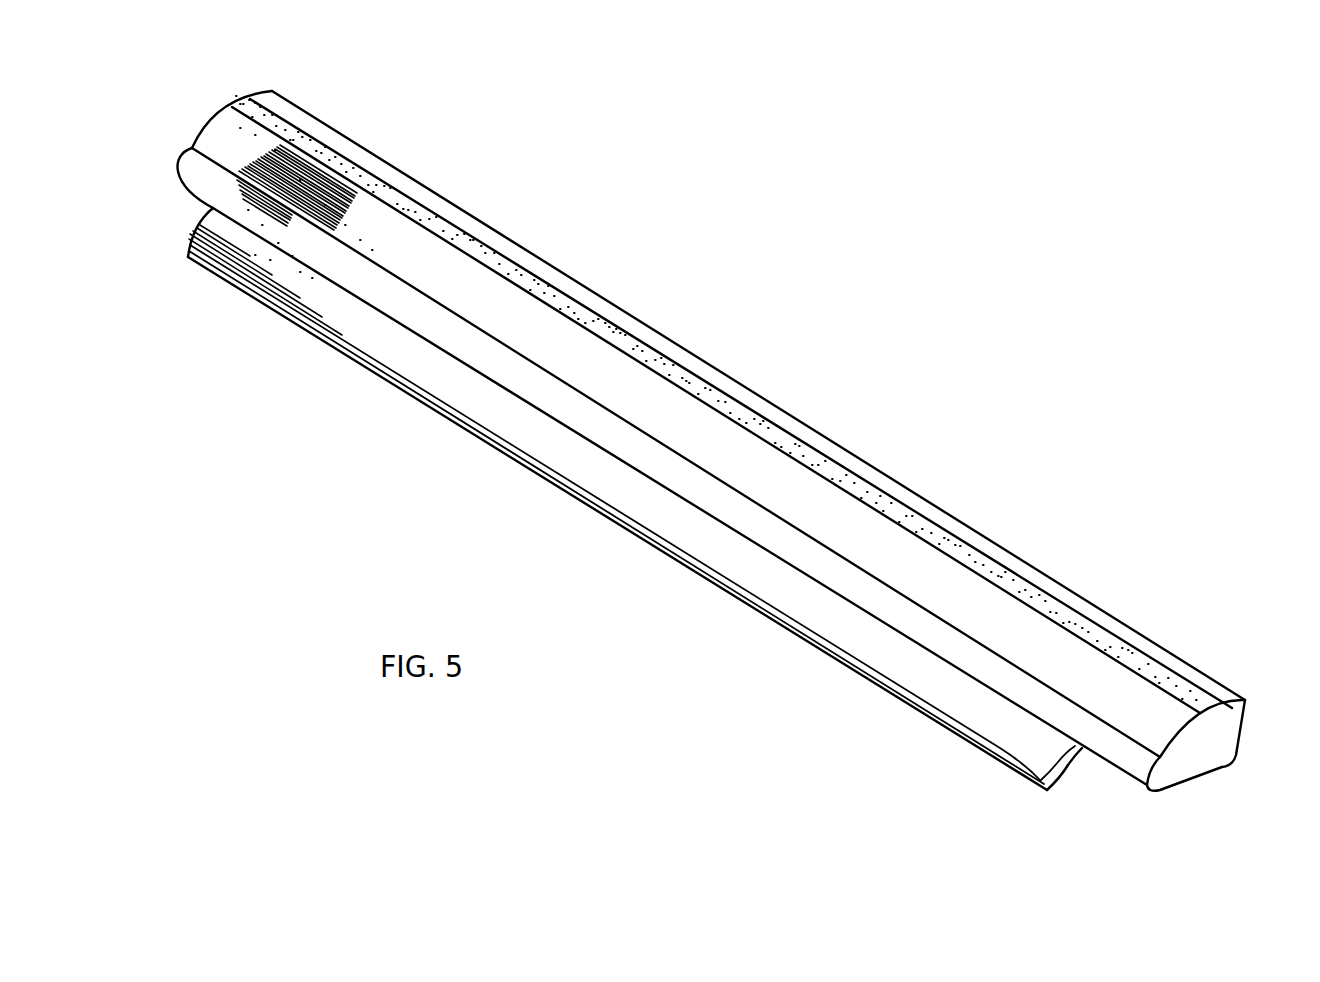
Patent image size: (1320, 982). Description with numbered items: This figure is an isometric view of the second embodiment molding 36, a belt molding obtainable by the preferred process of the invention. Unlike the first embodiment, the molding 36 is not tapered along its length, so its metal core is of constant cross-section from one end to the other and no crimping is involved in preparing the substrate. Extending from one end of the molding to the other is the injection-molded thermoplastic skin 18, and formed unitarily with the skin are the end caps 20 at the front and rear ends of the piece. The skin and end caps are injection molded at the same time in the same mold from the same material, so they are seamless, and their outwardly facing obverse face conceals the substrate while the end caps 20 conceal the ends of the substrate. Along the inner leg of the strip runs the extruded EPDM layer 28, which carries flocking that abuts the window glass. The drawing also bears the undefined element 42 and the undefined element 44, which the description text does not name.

The top surface of weatherstrip 18 is at (1108, 638).
The end portion of weatherstrip 20 is at (203, 132).
The sealing fin 28 is at (973, 708).
The weatherstrip 36 is at (640, 299).
The side face 42 is at (728, 457).
The stippled coating band 44 is at (1028, 590).